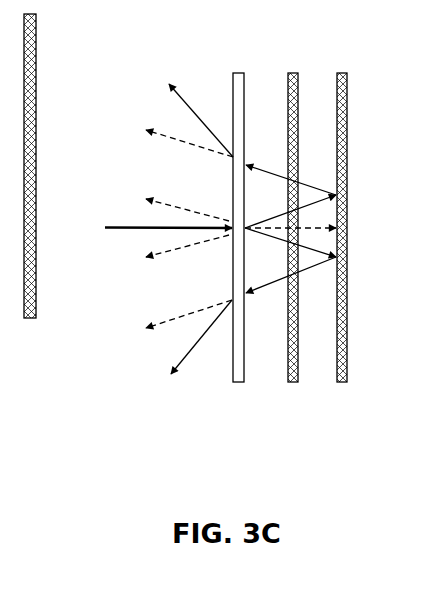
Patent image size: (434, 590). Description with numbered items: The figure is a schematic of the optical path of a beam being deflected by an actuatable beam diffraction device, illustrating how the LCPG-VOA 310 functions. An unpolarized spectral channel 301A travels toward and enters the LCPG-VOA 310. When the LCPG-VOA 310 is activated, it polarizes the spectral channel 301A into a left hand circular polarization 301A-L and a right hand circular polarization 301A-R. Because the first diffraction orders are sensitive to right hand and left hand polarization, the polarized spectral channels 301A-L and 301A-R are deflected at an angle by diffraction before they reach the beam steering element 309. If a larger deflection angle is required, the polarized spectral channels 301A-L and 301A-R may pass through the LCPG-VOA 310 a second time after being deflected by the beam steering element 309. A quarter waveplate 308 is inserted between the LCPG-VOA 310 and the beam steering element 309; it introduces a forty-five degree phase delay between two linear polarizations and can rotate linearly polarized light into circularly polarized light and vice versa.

The quarter waveplate 308 is at (28, 319).
The beam steering element 309 is at (340, 72).
The LCPG-VOA 310 is at (236, 72).
The unpolarized spectral channel 301A is at (140, 230).
The left hand circular polarization 301A-L is at (268, 222).
The right hand circular polarization 301A-R is at (268, 235).